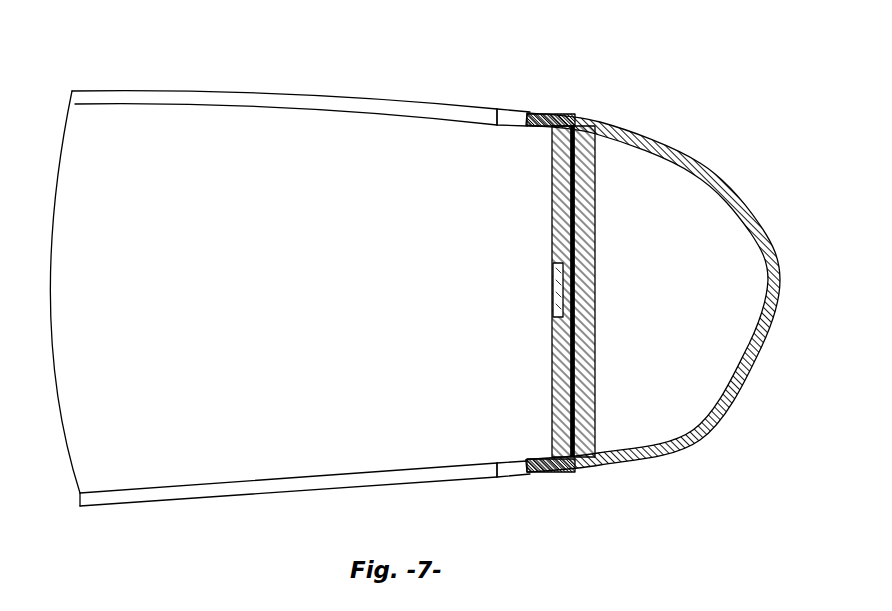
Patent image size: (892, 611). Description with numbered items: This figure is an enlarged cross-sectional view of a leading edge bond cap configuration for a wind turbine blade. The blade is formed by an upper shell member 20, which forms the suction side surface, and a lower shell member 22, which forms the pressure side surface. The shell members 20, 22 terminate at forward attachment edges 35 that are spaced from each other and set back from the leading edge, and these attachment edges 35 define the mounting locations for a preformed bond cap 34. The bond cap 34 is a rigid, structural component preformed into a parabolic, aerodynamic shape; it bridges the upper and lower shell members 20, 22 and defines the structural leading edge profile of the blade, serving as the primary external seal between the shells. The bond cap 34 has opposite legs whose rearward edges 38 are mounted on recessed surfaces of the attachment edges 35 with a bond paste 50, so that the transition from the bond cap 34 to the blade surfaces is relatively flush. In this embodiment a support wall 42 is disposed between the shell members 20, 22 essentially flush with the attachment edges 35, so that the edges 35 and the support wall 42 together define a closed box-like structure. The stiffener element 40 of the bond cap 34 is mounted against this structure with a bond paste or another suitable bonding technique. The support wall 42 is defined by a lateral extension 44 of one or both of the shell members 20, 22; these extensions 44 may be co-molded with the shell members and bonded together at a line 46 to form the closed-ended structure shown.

The upper shell member 20 is at (269, 91).
The lower shell member 22 is at (285, 493).
The bond cap 34 is at (763, 233).
The attachment edges 35 is at (540, 128).
The rearward edges 38 is at (542, 112).
The stiffener element 40 is at (597, 243).
The support wall 42 is at (508, 260).
The lateral extension 44 is at (552, 226).
The bond line 46 is at (553, 284).
The bond paste 50 is at (574, 350).